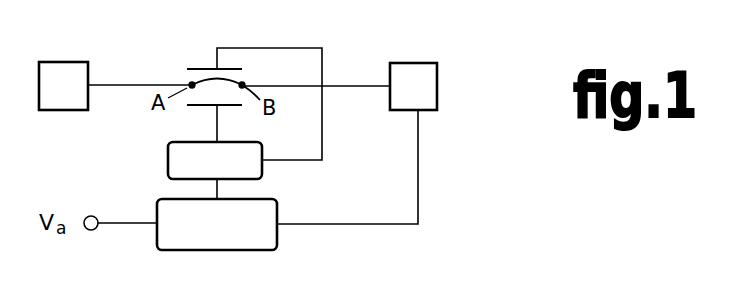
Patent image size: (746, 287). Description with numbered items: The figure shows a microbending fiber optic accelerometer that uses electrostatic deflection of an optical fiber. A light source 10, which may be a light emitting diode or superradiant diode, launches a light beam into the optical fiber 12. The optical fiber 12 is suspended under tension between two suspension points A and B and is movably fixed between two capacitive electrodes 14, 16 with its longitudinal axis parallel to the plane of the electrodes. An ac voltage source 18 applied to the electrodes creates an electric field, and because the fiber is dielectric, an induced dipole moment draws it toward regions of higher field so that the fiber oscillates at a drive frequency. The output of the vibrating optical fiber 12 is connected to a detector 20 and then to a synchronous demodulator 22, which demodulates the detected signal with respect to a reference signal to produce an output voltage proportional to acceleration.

The light source 10 is at (67, 64).
The optical fiber 12 is at (143, 84).
The capacitive electrode 14 is at (203, 107).
The capacitive electrode 16 is at (202, 68).
The ac voltage source 18 is at (263, 170).
The detector 20 is at (425, 64).
The synchronous demodulator 22 is at (275, 238).